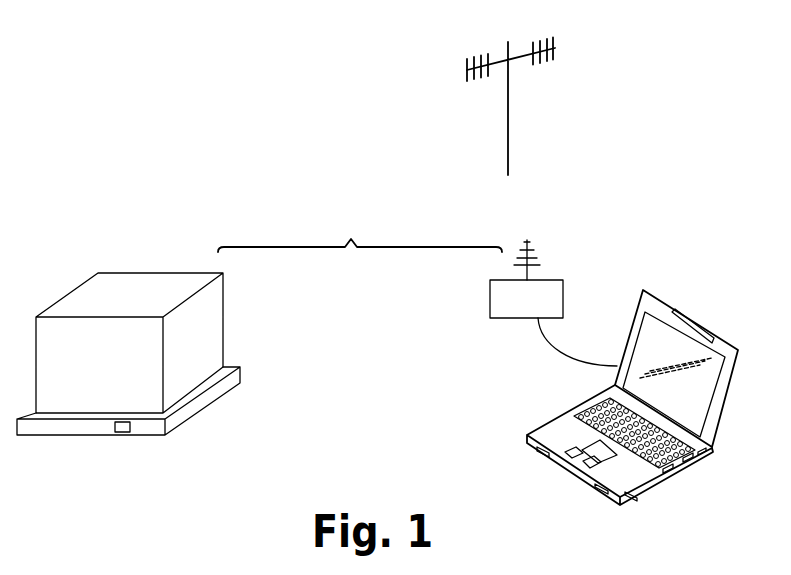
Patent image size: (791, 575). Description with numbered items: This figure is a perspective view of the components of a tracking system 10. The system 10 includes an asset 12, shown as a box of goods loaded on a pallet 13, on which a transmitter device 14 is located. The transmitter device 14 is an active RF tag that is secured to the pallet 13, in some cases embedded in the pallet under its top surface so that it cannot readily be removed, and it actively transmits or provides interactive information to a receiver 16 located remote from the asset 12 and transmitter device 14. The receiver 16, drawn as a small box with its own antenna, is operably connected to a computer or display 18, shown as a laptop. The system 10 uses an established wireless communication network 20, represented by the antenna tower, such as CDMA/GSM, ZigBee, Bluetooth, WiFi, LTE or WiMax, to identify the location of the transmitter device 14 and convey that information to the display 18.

The system 10 is at (314, 211).
The asset 12 is at (129, 288).
The pallet 13 is at (208, 397).
The transmitter device 14 is at (127, 435).
The receiver 16 is at (553, 288).
The computer or display 18 is at (693, 321).
The wireless communication network 20 is at (549, 82).